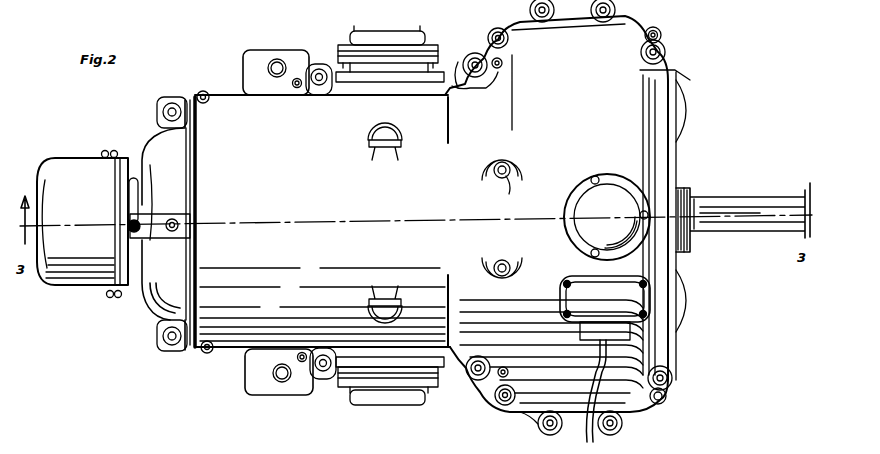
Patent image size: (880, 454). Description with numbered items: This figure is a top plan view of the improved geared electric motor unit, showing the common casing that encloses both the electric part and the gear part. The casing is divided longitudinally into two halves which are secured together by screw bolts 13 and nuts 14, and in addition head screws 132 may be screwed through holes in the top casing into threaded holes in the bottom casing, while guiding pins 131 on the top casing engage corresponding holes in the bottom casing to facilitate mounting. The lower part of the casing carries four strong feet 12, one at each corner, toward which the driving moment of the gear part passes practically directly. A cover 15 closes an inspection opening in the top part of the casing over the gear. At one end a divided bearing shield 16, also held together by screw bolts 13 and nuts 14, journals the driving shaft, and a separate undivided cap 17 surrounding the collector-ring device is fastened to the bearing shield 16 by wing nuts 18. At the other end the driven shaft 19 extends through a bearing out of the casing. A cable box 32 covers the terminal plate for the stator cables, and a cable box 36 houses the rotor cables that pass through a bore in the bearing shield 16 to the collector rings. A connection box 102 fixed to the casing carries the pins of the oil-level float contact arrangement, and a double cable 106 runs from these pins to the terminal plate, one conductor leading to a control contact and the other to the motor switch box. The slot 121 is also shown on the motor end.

The feet 12 is at (256, 52).
The screw bolts 13 is at (170, 103).
The nuts 14 is at (470, 56).
The cover 15 is at (608, 192).
The bearing shield 16 is at (160, 300).
The cap 17 is at (77, 284).
The wing nuts 18 is at (107, 150).
The driven shaft 19 is at (731, 201).
The cable box 32 is at (380, 44).
The cable box 36 is at (392, 398).
The connection box 102 is at (605, 291).
The double cable 106 is at (591, 442).
The slot 121 is at (129, 197).
The guiding pins 131 is at (297, 89).
The head screws 132 is at (500, 261).